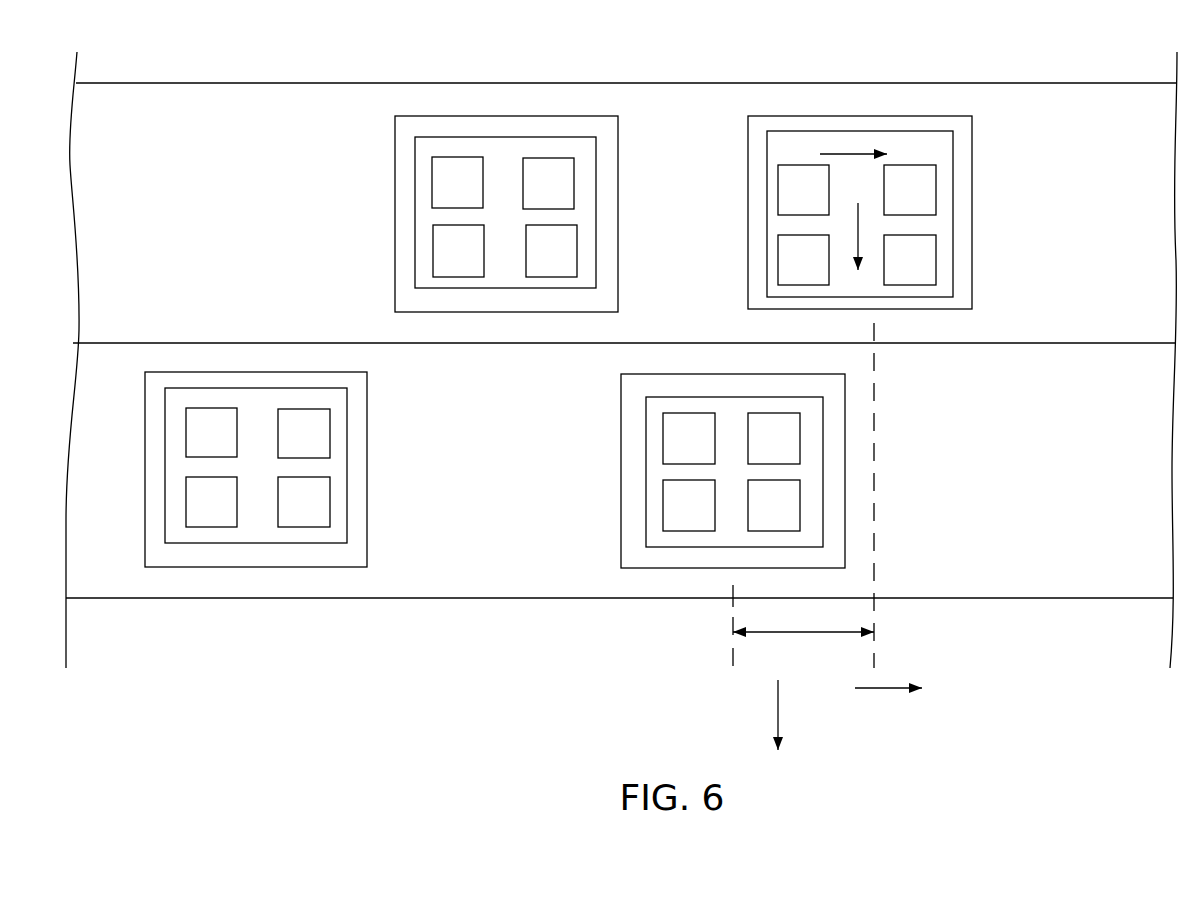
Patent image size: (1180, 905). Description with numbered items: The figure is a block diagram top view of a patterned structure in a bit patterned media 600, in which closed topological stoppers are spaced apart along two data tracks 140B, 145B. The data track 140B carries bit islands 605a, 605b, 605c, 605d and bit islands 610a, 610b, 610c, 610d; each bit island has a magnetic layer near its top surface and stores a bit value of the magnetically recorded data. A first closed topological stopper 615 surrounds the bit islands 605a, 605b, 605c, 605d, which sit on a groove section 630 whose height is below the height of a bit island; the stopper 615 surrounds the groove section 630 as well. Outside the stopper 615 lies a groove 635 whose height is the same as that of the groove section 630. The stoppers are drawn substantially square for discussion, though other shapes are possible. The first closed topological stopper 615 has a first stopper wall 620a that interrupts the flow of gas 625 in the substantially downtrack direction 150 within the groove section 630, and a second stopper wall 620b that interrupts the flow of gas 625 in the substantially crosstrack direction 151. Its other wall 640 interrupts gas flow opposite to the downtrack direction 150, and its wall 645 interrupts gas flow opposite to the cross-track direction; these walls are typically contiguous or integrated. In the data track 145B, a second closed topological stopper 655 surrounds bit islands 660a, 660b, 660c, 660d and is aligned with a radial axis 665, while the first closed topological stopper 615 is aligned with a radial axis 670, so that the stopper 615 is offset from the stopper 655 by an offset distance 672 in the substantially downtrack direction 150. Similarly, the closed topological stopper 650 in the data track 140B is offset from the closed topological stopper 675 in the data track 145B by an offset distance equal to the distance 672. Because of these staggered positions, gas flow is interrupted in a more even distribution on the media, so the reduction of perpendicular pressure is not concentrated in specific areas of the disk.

The bit patterned media 600 is at (602, 60).
The data track 140B is at (1123, 237).
The data track 145B is at (1088, 470).
The closed topological stopper 650 is at (414, 132).
The bit island 610a is at (457, 182).
The bit island 610b is at (548, 183).
The bit island 610c is at (458, 251).
The bit island 610d is at (551, 251).
The first closed topological stopper 615 is at (962, 127).
The wall 640 is at (748, 256).
The wall 645 is at (825, 115).
The groove section 630 is at (935, 149).
The flow of gas 625 is at (842, 153).
The bit island 605a is at (803, 190).
The bit island 605b is at (910, 190).
The bit island 605c is at (803, 260).
The bit island 605d is at (910, 260).
The first stopper wall 620a is at (973, 193).
The second stopper wall 620b is at (945, 314).
The groove 635 is at (262, 273).
The closed topological stopper 675 is at (353, 552).
The second closed topological stopper 655 is at (845, 514).
The bit island 660a is at (689, 438).
The bit island 660b is at (774, 438).
The bit island 660c is at (689, 505).
The bit island 660d is at (774, 505).
The radial axis 670 is at (877, 628).
The radial axis 665 is at (732, 623).
The offset distance 672 is at (835, 633).
The downtrack direction 150 is at (885, 687).
The crosstrack direction 151 is at (780, 697).